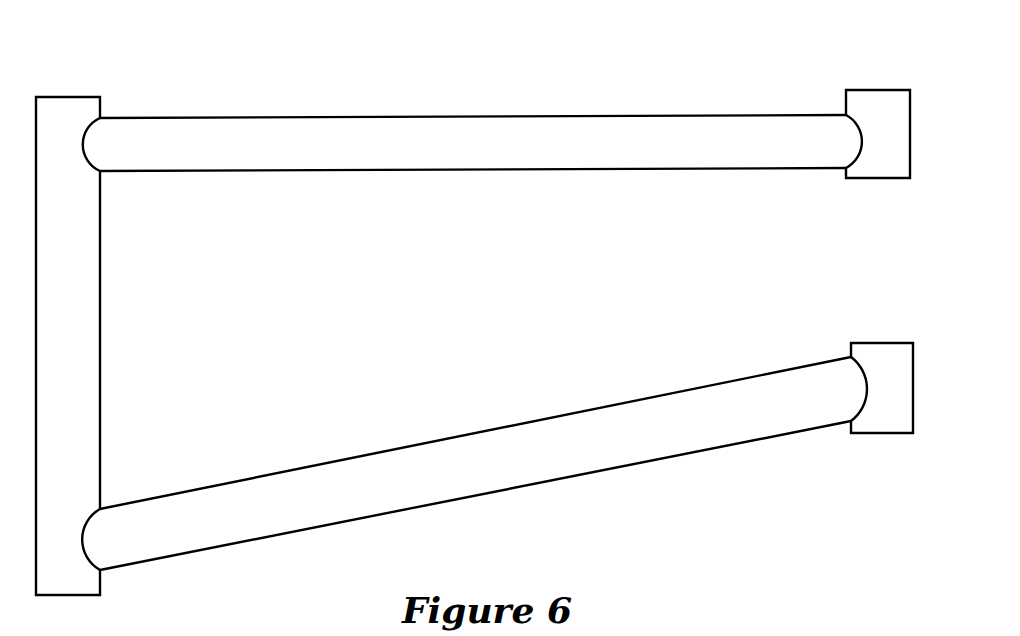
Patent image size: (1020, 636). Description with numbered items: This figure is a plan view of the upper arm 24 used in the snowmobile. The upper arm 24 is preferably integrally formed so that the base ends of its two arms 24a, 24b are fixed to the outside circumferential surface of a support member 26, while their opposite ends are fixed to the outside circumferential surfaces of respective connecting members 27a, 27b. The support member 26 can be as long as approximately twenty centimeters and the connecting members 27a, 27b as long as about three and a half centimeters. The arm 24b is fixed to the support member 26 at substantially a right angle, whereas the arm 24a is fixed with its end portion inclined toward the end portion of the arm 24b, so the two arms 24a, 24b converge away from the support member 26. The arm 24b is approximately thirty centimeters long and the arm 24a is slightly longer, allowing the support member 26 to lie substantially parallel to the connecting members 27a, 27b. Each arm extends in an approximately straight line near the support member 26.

The upper arm 24 is at (575, 39).
The arm 24a is at (667, 405).
The arm 24b is at (654, 125).
The support member 26 is at (60, 104).
The connecting member 27a is at (878, 420).
The connecting member 27b is at (897, 101).